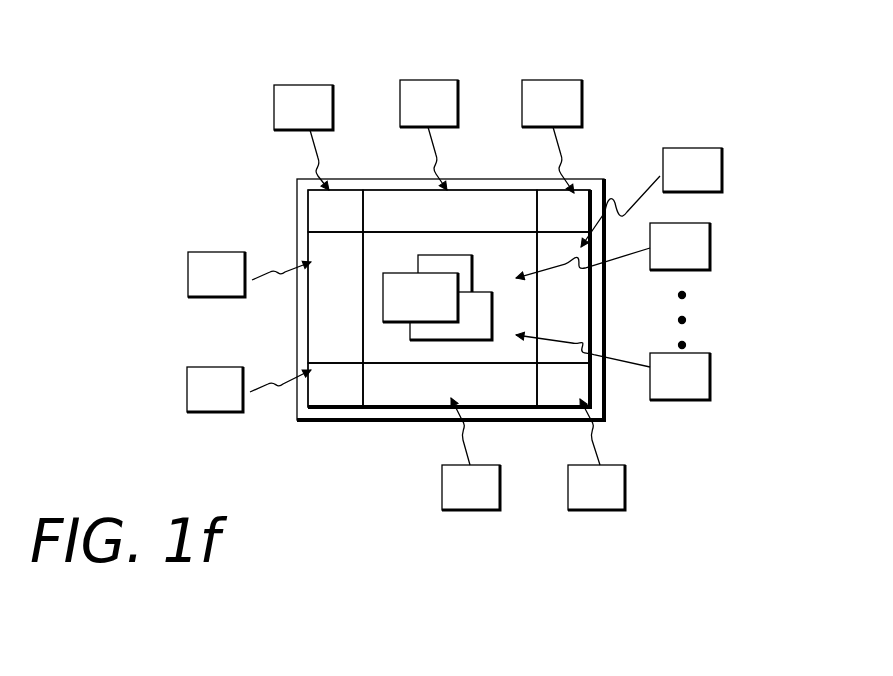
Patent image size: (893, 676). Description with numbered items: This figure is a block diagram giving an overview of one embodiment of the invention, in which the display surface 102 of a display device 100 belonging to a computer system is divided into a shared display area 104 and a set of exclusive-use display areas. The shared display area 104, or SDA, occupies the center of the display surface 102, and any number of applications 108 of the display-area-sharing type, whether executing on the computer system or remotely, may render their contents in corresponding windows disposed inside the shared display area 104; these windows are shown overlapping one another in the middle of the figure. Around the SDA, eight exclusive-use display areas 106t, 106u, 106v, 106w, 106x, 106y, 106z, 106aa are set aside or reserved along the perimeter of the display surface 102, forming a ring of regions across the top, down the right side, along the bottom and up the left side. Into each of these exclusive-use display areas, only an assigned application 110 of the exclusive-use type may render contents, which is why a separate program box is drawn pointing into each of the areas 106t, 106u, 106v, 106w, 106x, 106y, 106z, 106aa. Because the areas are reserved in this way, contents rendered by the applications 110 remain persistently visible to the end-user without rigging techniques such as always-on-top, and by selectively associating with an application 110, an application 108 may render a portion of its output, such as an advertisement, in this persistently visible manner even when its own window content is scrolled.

The display device 100 is at (340, 426).
The display surface 102 is at (415, 411).
The shared display area 104 is at (403, 256).
The exclusive-use display area 106t is at (353, 220).
The exclusive-use display area 106u is at (530, 220).
The exclusive-use display area 106v is at (585, 220).
The exclusive-use display area 106w is at (585, 339).
The exclusive-use display area 106x is at (582, 392).
The exclusive-use display area 106y is at (515, 396).
The exclusive-use display area 106z is at (352, 396).
The exclusive-use display area 106aa is at (362, 351).
The application 108 is at (710, 240).
The application 110 is at (274, 88).